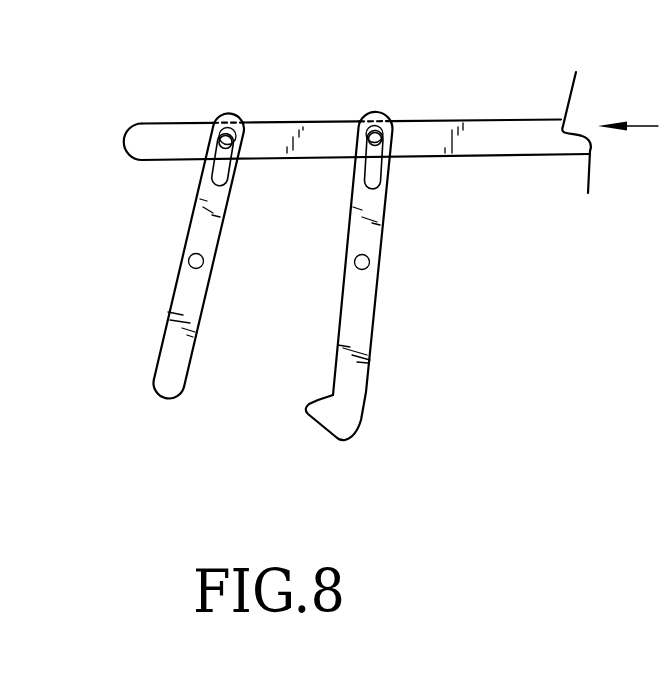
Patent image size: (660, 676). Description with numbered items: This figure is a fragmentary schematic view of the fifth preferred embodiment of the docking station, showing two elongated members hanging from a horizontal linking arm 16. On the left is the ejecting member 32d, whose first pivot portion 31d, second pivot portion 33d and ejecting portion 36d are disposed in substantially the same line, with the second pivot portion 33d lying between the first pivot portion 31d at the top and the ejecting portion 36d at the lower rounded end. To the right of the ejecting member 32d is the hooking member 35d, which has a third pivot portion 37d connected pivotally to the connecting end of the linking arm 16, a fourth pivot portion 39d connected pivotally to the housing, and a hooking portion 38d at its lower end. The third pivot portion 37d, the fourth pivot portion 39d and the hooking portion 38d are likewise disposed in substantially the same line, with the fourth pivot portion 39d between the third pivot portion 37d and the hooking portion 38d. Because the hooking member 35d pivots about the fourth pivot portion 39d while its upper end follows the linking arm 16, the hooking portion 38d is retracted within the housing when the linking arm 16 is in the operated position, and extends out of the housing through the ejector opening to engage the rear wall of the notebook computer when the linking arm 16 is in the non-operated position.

The linking arm 16 is at (508, 138).
The first pivot portion 31d is at (233, 130).
The ejecting member 32d is at (170, 223).
The second pivot portion 33d is at (190, 266).
The hooking member 35d is at (366, 237).
The ejecting portion 36d is at (168, 387).
The third pivot portion 37d is at (382, 121).
The hooking portion 38d is at (335, 417).
The fourth pivot portion 39d is at (362, 265).